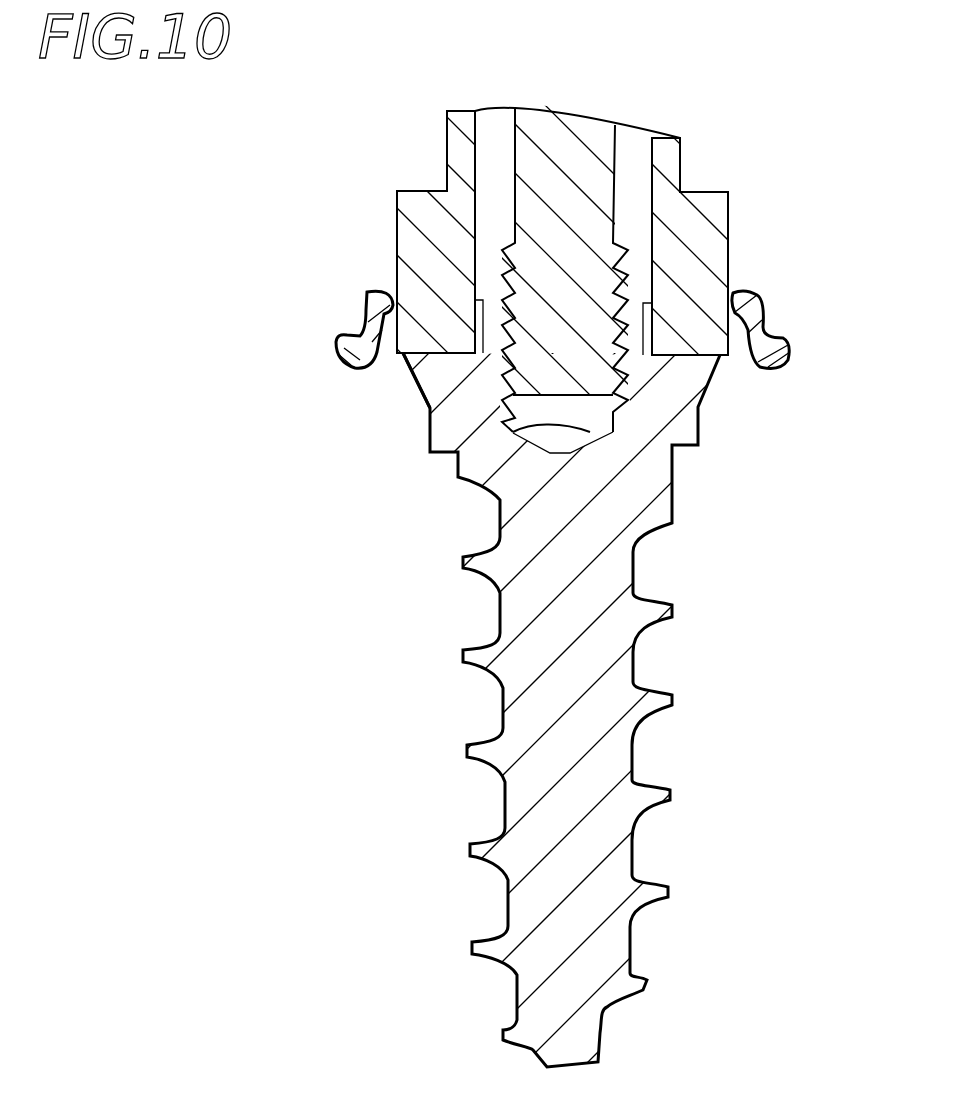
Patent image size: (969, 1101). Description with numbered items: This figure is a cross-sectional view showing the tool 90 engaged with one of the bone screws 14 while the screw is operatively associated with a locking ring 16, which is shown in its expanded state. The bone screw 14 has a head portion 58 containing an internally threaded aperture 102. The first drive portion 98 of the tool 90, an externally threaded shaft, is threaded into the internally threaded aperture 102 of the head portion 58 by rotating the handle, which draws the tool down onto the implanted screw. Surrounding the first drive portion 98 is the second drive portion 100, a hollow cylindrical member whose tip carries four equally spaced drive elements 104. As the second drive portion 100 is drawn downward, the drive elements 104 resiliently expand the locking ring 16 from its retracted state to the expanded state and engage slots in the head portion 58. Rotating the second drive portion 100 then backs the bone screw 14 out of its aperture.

The bone screw 14 is at (674, 608).
The locking ring 16 is at (368, 297).
The head portion 58 is at (412, 368).
The tool 90 is at (524, 261).
The first drive portion 98 is at (583, 183).
The second drive portion 100 is at (447, 144).
The internally threaded aperture 102 is at (590, 432).
The drive elements 104 is at (712, 261).